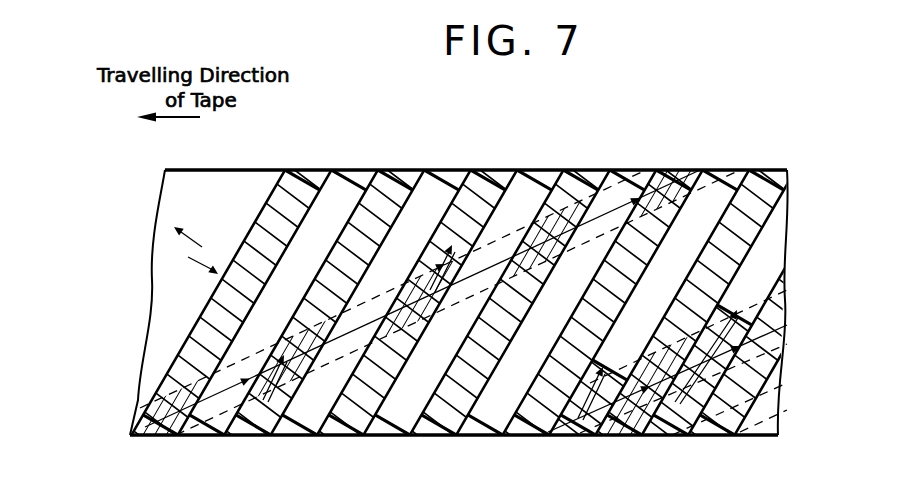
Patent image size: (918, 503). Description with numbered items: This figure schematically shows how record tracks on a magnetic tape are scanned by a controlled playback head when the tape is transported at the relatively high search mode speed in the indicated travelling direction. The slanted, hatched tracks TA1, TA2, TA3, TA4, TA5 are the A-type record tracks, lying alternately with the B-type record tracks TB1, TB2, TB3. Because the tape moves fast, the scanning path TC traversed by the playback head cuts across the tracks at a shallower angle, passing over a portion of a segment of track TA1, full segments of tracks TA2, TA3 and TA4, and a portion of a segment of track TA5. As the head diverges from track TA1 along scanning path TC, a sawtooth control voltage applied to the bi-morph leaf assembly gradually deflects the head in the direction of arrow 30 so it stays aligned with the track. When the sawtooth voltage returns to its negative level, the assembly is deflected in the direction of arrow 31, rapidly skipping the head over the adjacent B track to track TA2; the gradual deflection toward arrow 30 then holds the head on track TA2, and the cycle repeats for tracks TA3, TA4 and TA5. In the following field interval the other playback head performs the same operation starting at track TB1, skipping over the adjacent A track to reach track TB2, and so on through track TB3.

The arrow 30 is at (193, 233).
The arrow 31 is at (203, 258).
The track TA1 is at (305, 170).
The track TA2 is at (399, 170).
The track TA3 is at (487, 170).
The track TA4 is at (588, 170).
The track TA5 is at (684, 170).
The track TB1 is at (600, 434).
The track TB2 is at (672, 434).
The track TB3 is at (758, 418).
The scanning path TC is at (327, 365).